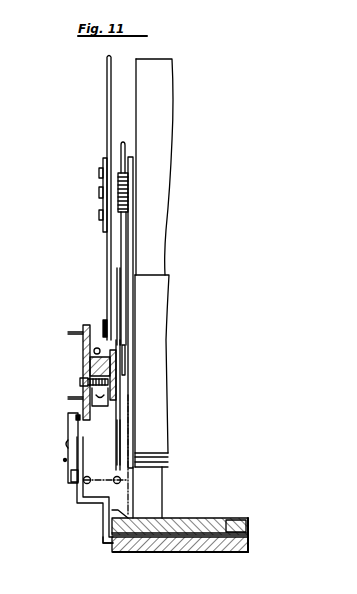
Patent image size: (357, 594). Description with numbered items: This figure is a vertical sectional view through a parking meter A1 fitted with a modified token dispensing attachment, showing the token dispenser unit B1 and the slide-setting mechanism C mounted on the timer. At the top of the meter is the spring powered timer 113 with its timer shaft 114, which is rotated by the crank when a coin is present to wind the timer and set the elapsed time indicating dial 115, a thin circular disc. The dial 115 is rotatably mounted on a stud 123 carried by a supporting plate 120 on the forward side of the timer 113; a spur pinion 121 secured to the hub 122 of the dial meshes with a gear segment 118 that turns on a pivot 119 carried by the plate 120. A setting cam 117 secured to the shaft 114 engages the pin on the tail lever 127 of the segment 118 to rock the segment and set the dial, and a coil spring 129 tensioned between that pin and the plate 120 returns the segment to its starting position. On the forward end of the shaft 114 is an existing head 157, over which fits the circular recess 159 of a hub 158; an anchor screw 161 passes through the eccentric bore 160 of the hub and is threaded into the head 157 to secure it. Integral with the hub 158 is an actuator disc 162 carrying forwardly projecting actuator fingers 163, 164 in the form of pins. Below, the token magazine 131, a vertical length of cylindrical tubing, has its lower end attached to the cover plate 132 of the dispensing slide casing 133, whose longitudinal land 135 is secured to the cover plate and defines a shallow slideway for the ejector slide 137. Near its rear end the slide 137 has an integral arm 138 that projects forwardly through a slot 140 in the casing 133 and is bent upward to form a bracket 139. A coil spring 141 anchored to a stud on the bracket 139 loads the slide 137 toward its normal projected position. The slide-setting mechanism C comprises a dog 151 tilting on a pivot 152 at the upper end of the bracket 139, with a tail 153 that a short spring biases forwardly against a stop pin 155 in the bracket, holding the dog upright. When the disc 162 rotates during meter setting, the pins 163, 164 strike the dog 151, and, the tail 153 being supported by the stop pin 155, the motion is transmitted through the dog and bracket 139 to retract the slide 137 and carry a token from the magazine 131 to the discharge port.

The token magazine 131 is at (158, 87).
The tail lever 127 is at (117, 377).
The spring powered timer 113 is at (158, 424).
The parking meter A1 is at (176, 305).
The elapsed time indicating dial 115 is at (109, 120).
The stud 123 is at (100, 190).
The spur pinion 121 is at (124, 160).
The hub 122 is at (128, 192).
The supporting plate 120 is at (133, 222).
The gear segment 118 is at (123, 242).
The pivot 119 is at (119, 282).
The actuator disc 162 is at (90, 322).
The actuator finger 164 is at (58, 335).
The actuator finger 163 is at (68, 398).
The coil spring 129 is at (93, 351).
The hub 158 is at (90, 362).
The anchor screw 161 is at (80, 382).
The eccentric bore 160 is at (103, 404).
The head 157 is at (116, 398).
The timer shaft 114 is at (121, 378).
The circular recess 159 is at (122, 356).
The slide-setting mechanism C is at (40, 388).
The dog 151 is at (72, 421).
The pivot 152 is at (66, 444).
The stop pin 155 is at (63, 460).
The tail 153 is at (70, 477).
The coil spring 141 is at (84, 482).
The setting cam 117 is at (118, 450).
The bracket 139 is at (80, 500).
The arm 138 is at (107, 541).
The token dispenser unit B1 is at (96, 533).
The ejector slide 137 is at (200, 530).
The dispensing slide casing 133 is at (201, 550).
The land 135 is at (228, 532).
The cover plate 132 is at (246, 526).
The slot 140 is at (117, 548).